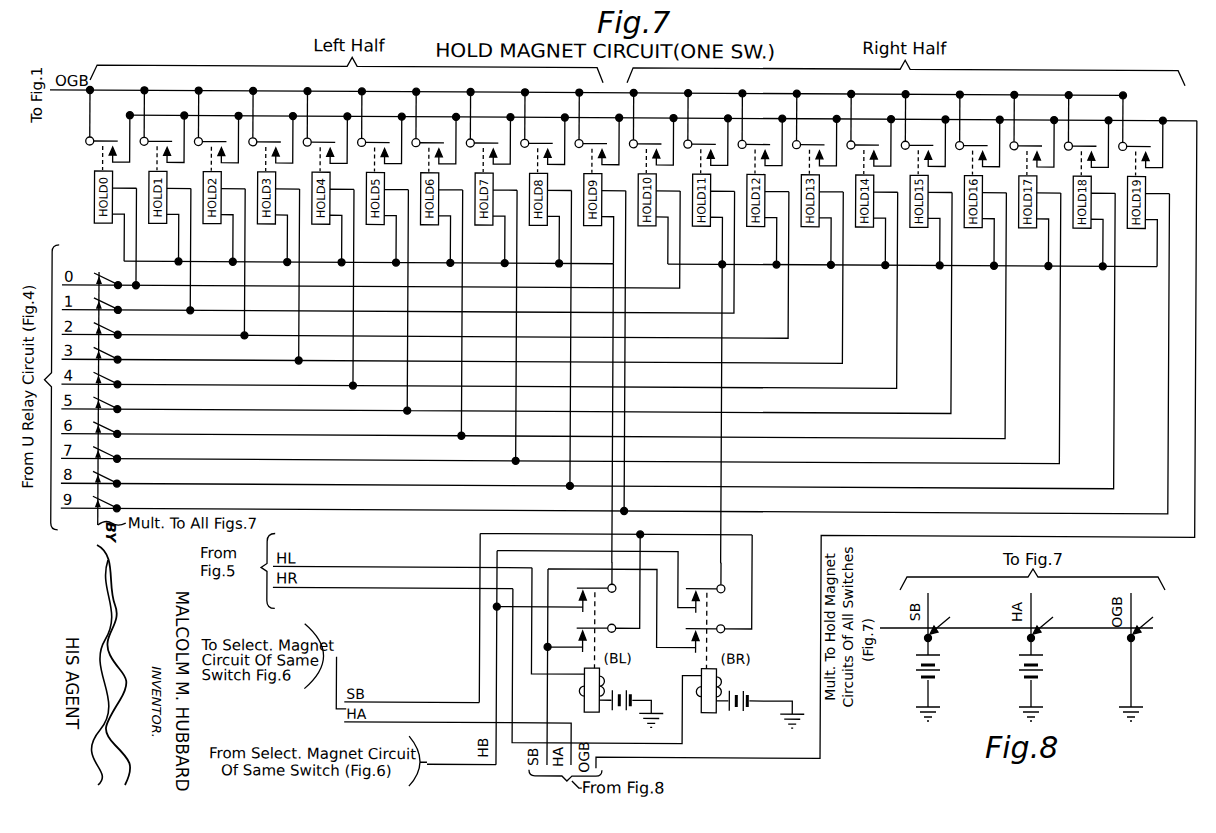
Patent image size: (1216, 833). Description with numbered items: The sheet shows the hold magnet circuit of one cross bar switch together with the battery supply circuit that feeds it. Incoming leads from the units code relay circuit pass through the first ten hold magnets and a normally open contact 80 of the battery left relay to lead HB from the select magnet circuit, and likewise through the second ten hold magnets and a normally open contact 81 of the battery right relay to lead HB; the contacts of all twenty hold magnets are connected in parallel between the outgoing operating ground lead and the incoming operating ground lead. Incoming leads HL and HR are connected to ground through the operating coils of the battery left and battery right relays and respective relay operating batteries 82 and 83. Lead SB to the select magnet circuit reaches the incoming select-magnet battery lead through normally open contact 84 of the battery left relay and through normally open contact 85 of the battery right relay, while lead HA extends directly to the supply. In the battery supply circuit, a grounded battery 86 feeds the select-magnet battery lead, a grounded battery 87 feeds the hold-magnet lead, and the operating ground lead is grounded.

In FIG. 7, the normally open contact 80 is at (583, 612).
In FIG. 7, the normally open contact 81 is at (696, 612).
In FIG. 7, the relay operating battery 82 is at (618, 705).
In FIG. 7, the relay operating battery 83 is at (767, 705).
In FIG. 7, the normally open contact 84 is at (583, 650).
In FIG. 7, the normally open contact 85 is at (696, 650).
In FIG. 8, the grounded battery 86 is at (924, 680).
In FIG. 8, the grounded battery 87 is at (1027, 680).